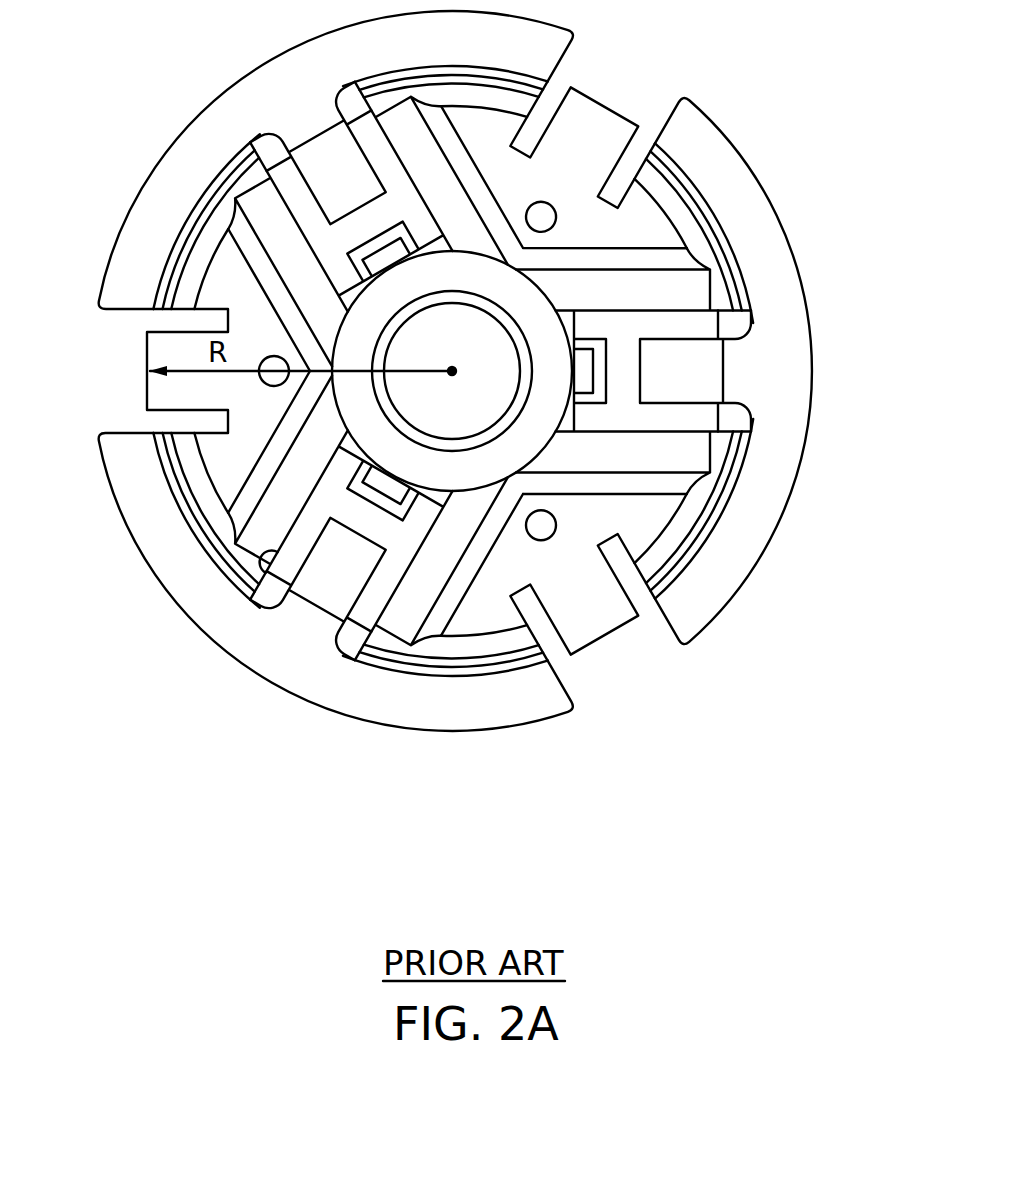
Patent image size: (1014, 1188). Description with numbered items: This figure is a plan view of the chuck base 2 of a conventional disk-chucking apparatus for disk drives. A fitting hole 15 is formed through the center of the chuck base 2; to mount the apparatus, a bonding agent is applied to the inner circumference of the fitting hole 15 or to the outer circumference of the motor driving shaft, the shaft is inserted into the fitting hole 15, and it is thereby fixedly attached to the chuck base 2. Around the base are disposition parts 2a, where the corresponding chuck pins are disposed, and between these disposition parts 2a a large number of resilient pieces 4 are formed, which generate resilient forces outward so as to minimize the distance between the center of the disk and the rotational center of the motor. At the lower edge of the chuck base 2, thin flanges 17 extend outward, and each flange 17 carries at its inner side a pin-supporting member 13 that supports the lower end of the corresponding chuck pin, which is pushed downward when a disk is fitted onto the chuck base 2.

The chuck base 2 is at (797, 147).
The disposition part 2a is at (287, 547).
The resilient piece 4 is at (157, 394).
The pin-supporting member 13 is at (736, 372).
The fitting hole 15 is at (435, 440).
The flange 17 is at (403, 697).